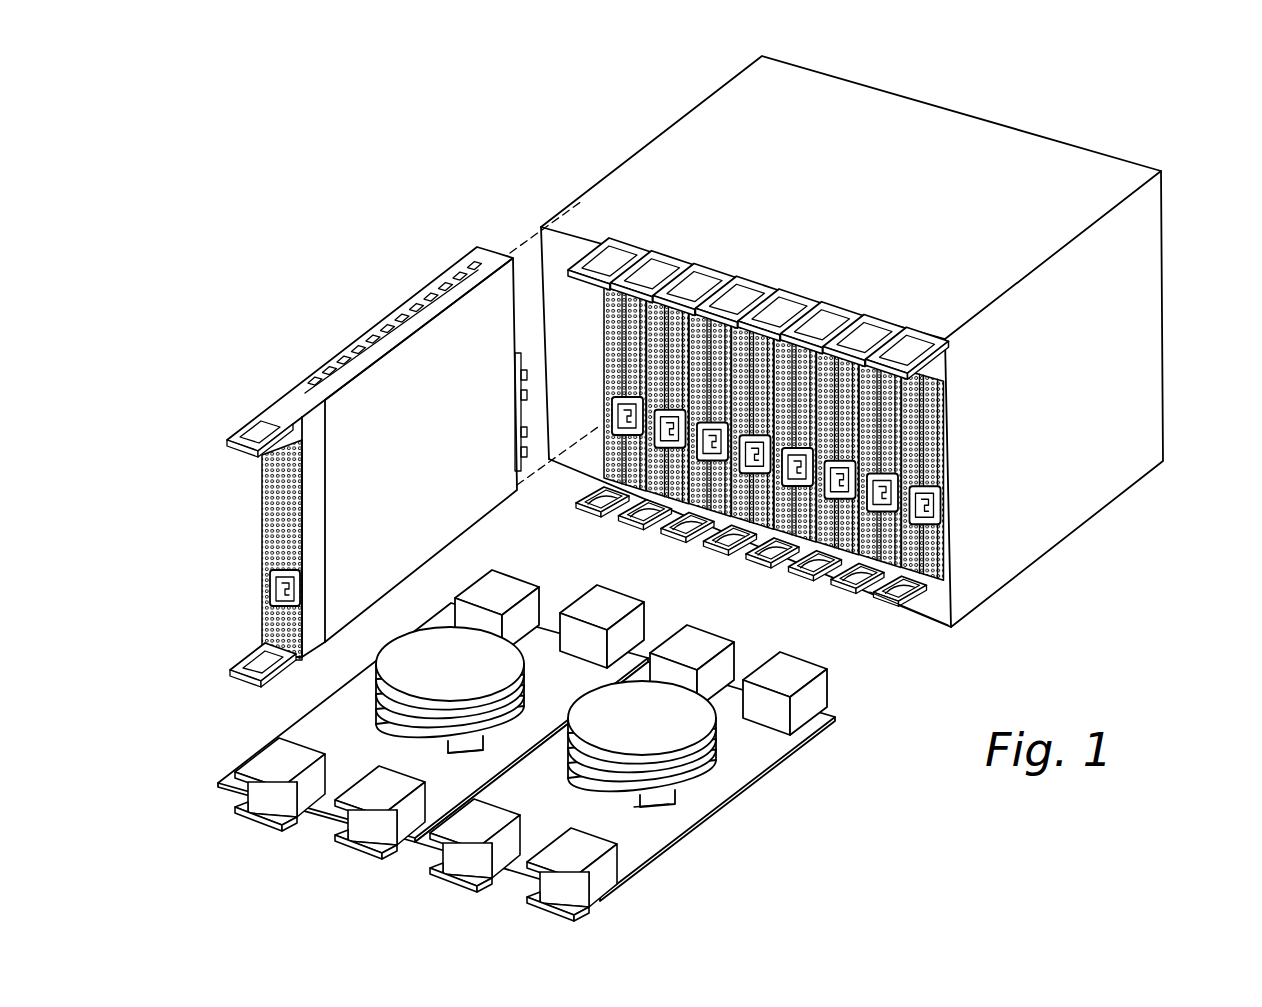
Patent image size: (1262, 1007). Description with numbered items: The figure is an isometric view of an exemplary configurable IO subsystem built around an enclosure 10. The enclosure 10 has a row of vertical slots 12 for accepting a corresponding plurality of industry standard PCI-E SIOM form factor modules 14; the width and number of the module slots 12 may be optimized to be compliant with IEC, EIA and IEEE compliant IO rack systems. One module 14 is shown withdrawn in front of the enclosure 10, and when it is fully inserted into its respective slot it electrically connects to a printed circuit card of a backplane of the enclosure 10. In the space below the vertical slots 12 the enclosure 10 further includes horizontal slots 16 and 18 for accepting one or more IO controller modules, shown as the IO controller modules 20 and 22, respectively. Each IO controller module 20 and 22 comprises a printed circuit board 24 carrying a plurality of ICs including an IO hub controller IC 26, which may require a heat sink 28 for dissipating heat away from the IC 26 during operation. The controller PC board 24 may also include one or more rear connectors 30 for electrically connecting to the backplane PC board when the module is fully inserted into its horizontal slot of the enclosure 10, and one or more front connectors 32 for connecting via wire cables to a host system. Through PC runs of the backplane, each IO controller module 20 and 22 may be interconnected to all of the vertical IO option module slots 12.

The enclosure 10 is at (1093, 388).
The vertical slots 12 is at (567, 254).
The PCI-E SIOM form factor module 14 is at (335, 358).
The horizontal slot 16 is at (572, 486).
The horizontal slot 18 is at (885, 600).
The IO controller module 20 is at (297, 727).
The IO controller module 22 is at (645, 862).
The printed circuit board 24 is at (357, 740).
The IO hub controller IC 26 is at (453, 748).
The heat sink 28 is at (443, 667).
The rear connector 30 is at (593, 613).
The front connector 32 is at (272, 800).